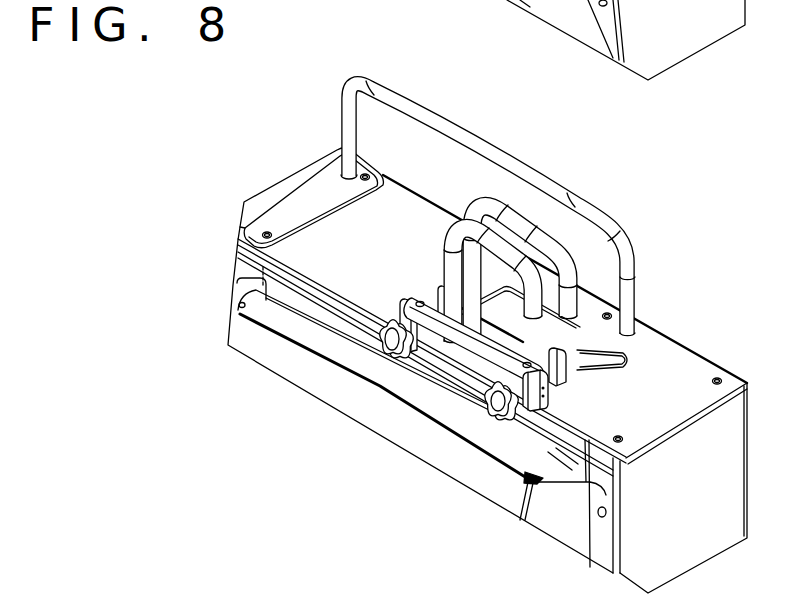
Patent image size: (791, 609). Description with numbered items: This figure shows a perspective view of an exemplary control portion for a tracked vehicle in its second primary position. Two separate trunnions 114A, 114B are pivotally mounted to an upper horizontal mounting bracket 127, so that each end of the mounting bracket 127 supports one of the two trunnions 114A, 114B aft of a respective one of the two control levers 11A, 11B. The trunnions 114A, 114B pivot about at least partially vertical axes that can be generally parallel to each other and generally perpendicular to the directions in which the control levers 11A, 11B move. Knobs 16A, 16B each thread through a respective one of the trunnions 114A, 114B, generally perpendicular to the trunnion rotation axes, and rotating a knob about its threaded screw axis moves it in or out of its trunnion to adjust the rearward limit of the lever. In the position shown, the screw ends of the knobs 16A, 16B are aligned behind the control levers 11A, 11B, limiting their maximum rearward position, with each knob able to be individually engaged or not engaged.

The control lever 11A is at (477, 205).
The control lever 11B is at (545, 258).
The trunnion 114A is at (406, 306).
The trunnion 114B is at (542, 388).
The knob 16A is at (390, 342).
The knob 16B is at (499, 404).
The upper horizontal mounting bracket 127 is at (484, 340).